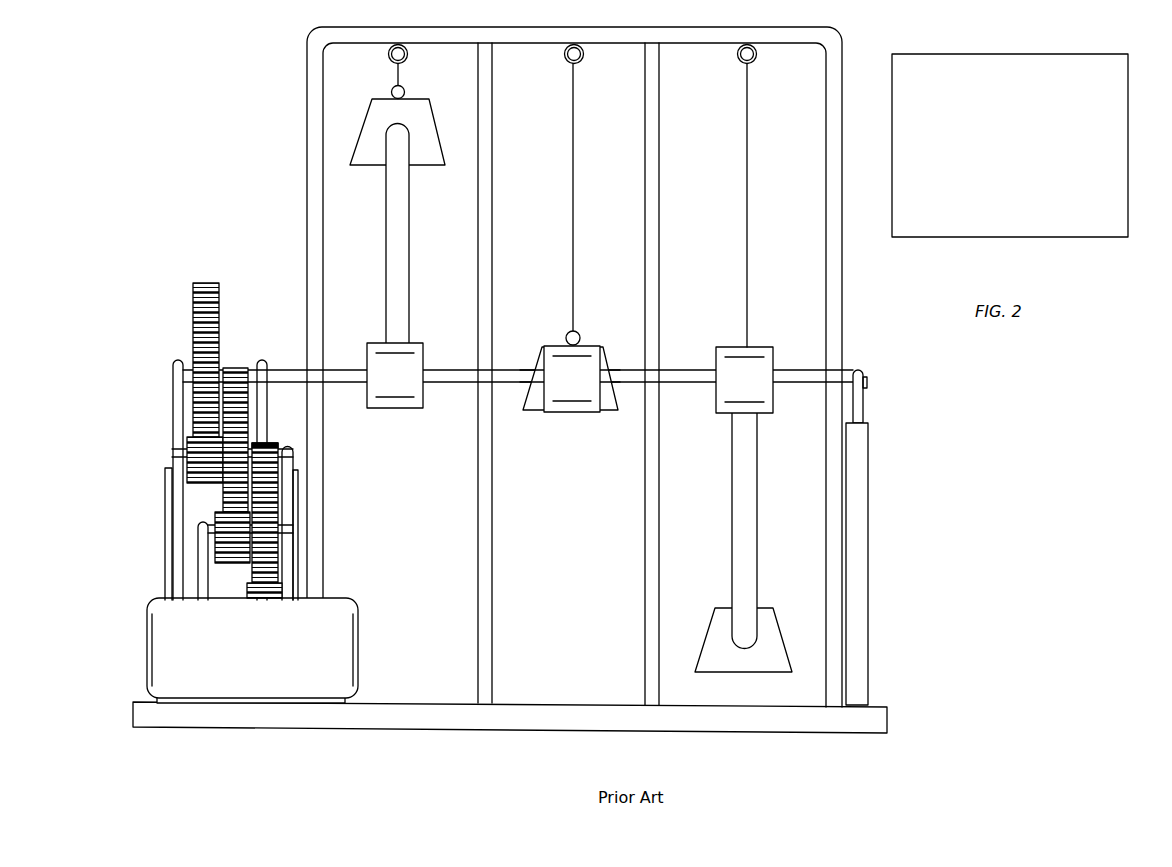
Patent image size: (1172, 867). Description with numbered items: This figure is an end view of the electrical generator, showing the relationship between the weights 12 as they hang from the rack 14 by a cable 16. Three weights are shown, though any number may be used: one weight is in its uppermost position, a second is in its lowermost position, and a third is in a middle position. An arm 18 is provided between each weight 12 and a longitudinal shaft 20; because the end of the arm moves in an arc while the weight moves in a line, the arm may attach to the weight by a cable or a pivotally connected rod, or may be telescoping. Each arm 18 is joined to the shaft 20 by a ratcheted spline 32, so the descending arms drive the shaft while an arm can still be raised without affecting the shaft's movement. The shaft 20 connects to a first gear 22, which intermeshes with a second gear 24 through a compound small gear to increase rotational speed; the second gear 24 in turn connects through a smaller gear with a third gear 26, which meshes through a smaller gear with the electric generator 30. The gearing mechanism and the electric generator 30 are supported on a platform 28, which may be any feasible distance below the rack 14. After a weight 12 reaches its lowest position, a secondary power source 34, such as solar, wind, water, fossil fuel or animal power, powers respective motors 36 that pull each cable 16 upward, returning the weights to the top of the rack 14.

The weight 12 is at (368, 112).
The rack 14 is at (307, 70).
The cable 16 is at (397, 70).
The arm 18 is at (386, 262).
The longitudinal shaft 20 is at (813, 372).
The first gear 22 is at (205, 282).
The second gear 24 is at (242, 368).
The third gear 26 is at (273, 443).
The platform 28 is at (580, 702).
The electric generator 30 is at (252, 650).
The ratcheted spline 32 is at (570, 378).
The secondary power source 34 is at (892, 106).
The motor 36 is at (408, 56).